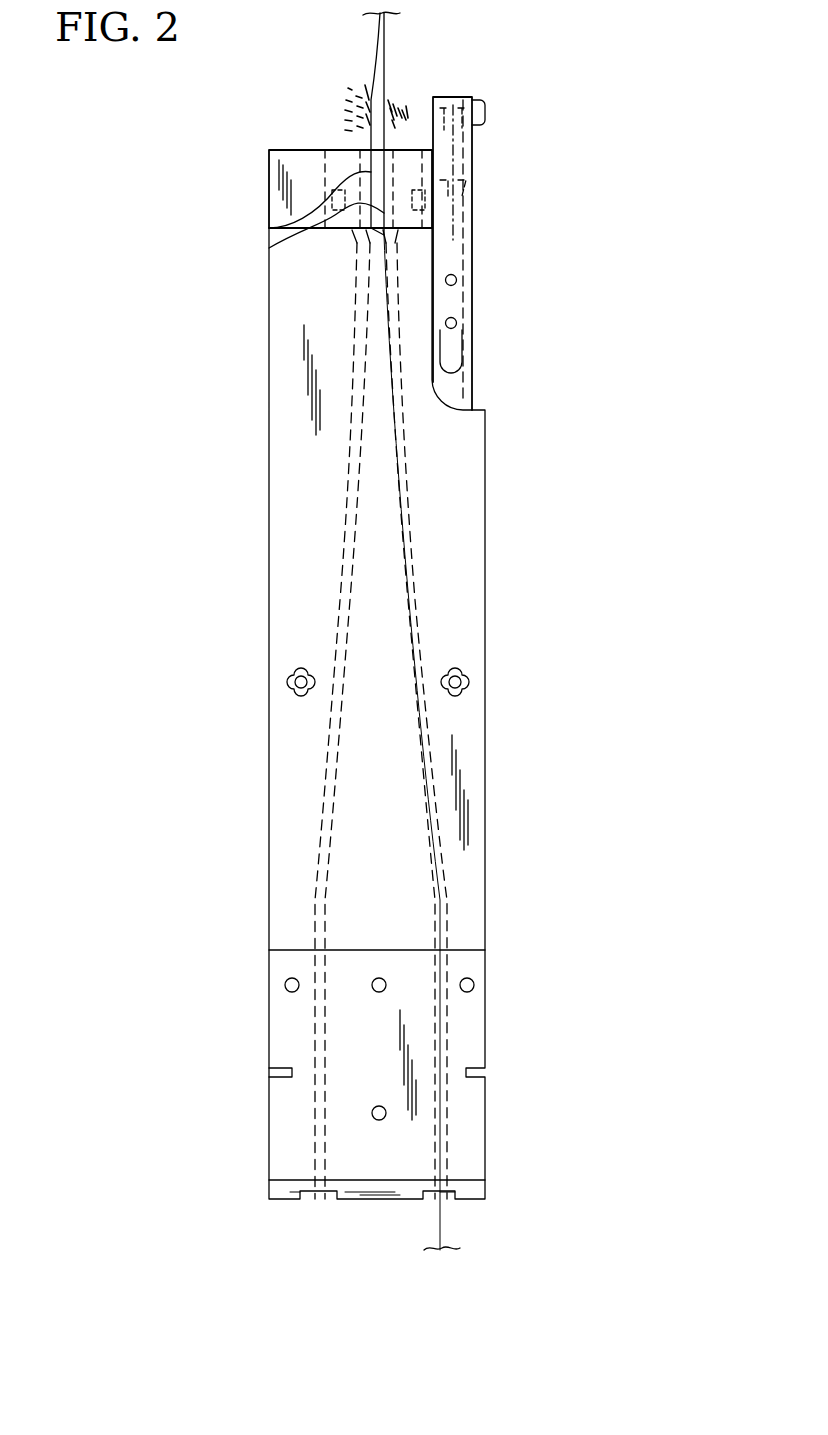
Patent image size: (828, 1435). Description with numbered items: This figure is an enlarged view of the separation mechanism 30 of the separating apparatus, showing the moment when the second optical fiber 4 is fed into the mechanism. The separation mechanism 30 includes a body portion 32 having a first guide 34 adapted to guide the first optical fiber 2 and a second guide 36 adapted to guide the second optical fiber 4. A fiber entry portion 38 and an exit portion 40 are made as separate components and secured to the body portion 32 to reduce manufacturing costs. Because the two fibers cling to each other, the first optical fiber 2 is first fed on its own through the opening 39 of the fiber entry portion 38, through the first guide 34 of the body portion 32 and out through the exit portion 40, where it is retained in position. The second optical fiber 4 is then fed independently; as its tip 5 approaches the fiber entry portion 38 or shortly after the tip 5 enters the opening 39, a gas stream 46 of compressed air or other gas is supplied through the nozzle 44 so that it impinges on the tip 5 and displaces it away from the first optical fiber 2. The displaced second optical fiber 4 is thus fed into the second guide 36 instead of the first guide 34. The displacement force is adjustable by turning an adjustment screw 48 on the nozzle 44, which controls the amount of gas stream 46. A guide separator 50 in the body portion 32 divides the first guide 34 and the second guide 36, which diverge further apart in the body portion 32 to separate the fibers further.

The first optical fiber 2 is at (385, 80).
The second optical fiber 4 is at (372, 82).
The tip 5 is at (371, 172).
The separation mechanism 30 is at (640, 108).
The body portion 32 is at (485, 447).
The first guide 34 is at (398, 596).
The second guide 36 is at (348, 605).
The fiber entry portion 38 is at (268, 195).
The opening 39 is at (358, 148).
The exit portion 40 is at (485, 1015).
The nozzle 44 is at (452, 96).
The gas stream 46 is at (346, 110).
The adjustment screw 48 is at (485, 120).
The guide separator 50 is at (384, 213).